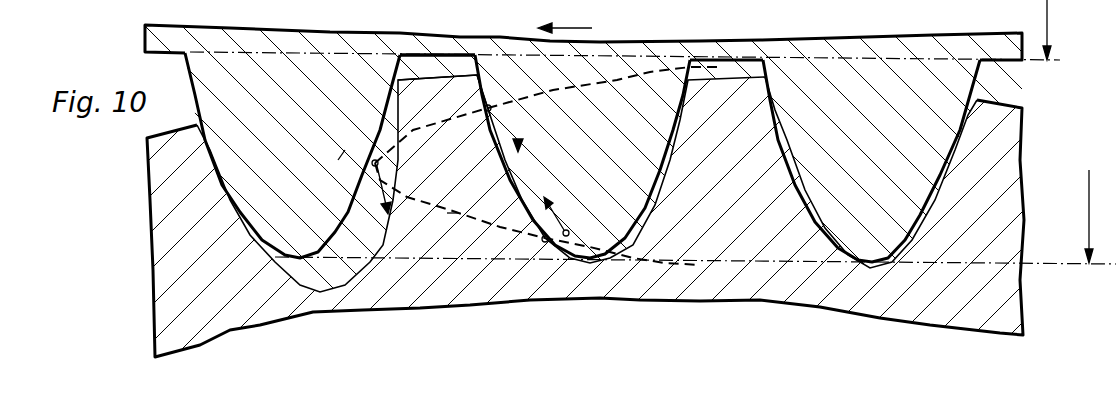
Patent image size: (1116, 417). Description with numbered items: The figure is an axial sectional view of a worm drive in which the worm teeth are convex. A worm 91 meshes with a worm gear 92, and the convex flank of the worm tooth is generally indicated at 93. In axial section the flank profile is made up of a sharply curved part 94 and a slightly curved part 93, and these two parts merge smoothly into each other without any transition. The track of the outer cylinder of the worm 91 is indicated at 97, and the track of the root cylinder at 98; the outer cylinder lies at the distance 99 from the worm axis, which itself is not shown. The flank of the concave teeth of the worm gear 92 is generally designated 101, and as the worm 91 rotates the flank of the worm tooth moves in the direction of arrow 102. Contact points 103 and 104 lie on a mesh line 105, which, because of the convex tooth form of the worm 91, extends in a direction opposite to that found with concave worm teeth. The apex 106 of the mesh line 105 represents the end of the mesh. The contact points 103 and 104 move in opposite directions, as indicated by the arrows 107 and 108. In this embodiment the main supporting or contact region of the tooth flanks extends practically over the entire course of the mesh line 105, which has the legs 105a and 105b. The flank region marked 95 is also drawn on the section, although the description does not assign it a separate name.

The worm 91 is at (265, 145).
The worm gear 92 is at (240, 301).
The convex flank of the worm tooth 93 is at (348, 216).
The sharply curved part 94 is at (560, 257).
The tooth flank 95 is at (500, 148).
The track of the outer cylinder 97 is at (757, 263).
The track of the root cylinder 98 is at (838, 58).
The distance of the outer cylinder 99 is at (1075, 131).
The flank of the concave teeth of the worm gear 101 is at (338, 160).
The direction of movement of the worm tooth flank 102 is at (569, 19).
The contact point 103 is at (543, 243).
The contact point 104 is at (470, 108).
The mesh line 105 is at (653, 72).
The leg of the mesh line 105a is at (401, 54).
The leg of the mesh line 105b is at (452, 213).
The apex of the mesh line 106 is at (373, 160).
The arrow indicating movement of contact point 107 is at (520, 140).
The arrow indicating movement of contact point 108 is at (568, 237).